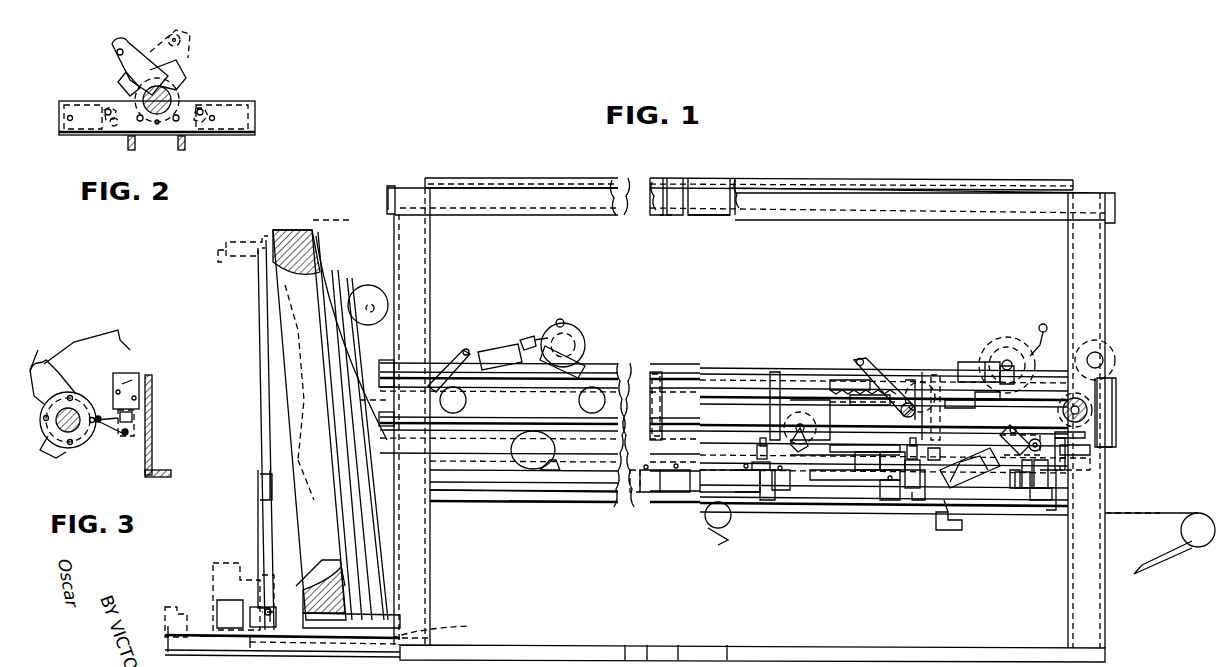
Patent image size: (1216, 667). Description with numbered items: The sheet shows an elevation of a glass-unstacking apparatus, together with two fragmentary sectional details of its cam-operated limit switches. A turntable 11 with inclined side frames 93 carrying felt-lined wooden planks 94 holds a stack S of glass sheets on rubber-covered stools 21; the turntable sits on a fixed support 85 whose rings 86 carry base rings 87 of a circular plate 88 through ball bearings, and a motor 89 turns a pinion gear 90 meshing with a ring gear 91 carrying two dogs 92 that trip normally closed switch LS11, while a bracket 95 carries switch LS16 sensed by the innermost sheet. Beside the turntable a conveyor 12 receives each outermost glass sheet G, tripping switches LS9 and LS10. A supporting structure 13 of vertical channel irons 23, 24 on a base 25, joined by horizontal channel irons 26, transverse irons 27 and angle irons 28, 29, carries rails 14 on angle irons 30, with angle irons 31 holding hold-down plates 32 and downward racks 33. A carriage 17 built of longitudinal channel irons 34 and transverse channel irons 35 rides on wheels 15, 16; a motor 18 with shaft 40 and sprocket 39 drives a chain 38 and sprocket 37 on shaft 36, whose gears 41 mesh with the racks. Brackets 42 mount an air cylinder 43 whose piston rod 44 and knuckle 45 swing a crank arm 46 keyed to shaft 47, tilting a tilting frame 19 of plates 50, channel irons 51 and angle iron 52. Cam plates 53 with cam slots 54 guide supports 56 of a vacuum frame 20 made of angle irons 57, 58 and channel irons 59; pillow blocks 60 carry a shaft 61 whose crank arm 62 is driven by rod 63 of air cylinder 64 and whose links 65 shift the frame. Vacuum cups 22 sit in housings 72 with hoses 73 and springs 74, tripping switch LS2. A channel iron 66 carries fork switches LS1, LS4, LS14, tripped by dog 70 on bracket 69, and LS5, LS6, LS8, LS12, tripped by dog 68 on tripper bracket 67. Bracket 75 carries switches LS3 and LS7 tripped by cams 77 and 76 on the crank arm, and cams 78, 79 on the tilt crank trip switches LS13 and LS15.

In FIG. 1, the turntable 11 is at (255, 244).
In FIG. 1, the conveyor 12 is at (718, 540).
In FIG. 1, the supporting structure 13 is at (390, 186).
In FIG. 1, the horizontal rails 14 is at (850, 410).
In FIG. 1, the wheels 15 is at (962, 407).
In FIG. 1, the wheels 16 is at (1022, 427).
In FIG. 1, the carriage 17 is at (940, 385).
In FIG. 1, the motor 18 is at (562, 320).
In FIG. 1, the tilting frame 19 is at (848, 400).
In FIG. 1, the vacuum frame 20 is at (750, 484).
In FIG. 1, the stools 21 is at (346, 622).
In FIG. 1, the vacuum cups 22 is at (775, 496).
In FIG. 1, the vertical channel irons 23 is at (431, 250).
In FIG. 1, the vertical channel irons 24 is at (1068, 254).
In FIG. 1, the base 25 is at (720, 642).
In FIG. 1, the horizontal channel irons 26 is at (740, 218).
In FIG. 1, the transverse horizontal irons 27 is at (388, 212).
In FIG. 1, the angle irons 28 is at (740, 178).
In FIG. 1, the transverse angle irons 29 is at (428, 178).
In FIG. 1, the angle iron 30 is at (448, 438).
In FIG. 1, the angle irons 31 is at (442, 352).
In FIG. 1, the hold-down plate 32 is at (386, 362).
In FIG. 1, the horizontal racks 33 is at (840, 380).
In FIG. 1, the longitudinal channel irons 34 is at (989, 403).
In FIG. 3, the transverse channel irons 35 is at (152, 438).
In FIG. 1, the transverse channel irons 35 is at (934, 375).
In FIG. 1, the shaft 36 is at (1090, 400).
In FIG. 1, the sprocket 37 is at (1095, 412).
In FIG. 1, the chain 38 is at (1006, 337).
In FIG. 1, the sprocket 39 is at (1030, 366).
In FIG. 1, the shaft 40 is at (1046, 328).
In FIG. 1, the gears 41 is at (1100, 380).
In FIG. 1, the brackets 42 is at (990, 362).
In FIG. 1, the air cylinder 43 is at (968, 362).
In FIG. 1, the piston rod 44 is at (906, 380).
In FIG. 1, the knuckle 45 is at (870, 395).
In FIG. 3, the crank arm 46 is at (82, 356).
In FIG. 1, the crank arm 46 is at (896, 392).
In FIG. 3, the shaft 47 is at (60, 440).
In FIG. 1, the shaft 47 is at (922, 372).
In FIG. 1, the plates 50 is at (866, 456).
In FIG. 1, the channel irons 51 is at (1126, 448).
In FIG. 1, the angle iron 52 is at (890, 456).
In FIG. 1, the cam plate 53 is at (800, 400).
In FIG. 1, the cam slot 54 is at (775, 400).
In FIG. 1, the supports 56 is at (836, 484).
In FIG. 1, the angle irons 57 is at (845, 458).
In FIG. 1, the angle irons 58 is at (758, 452).
In FIG. 2, the channel irons 59 is at (180, 144).
In FIG. 1, the channel irons 59 is at (1040, 470).
In FIG. 1, the pillow blocks 60 is at (1043, 502).
In FIG. 2, the shaft 61 is at (173, 98).
In FIG. 1, the shaft 61 is at (1068, 466).
In FIG. 2, the crank arm 62 is at (158, 52).
In FIG. 1, the crank arm 62 is at (1012, 426).
In FIG. 1, the rod 63 is at (1026, 470).
In FIG. 1, the air cylinder 64 is at (970, 468).
In FIG. 1, the link 65 is at (1040, 440).
In FIG. 1, the channel iron 66 is at (524, 480).
In FIG. 1, the tripper bracket 67 is at (944, 455).
In FIG. 1, the dog 68 is at (1012, 472).
In FIG. 1, the bracket 69 is at (1092, 433).
In FIG. 1, the dog 70 is at (1092, 464).
In FIG. 1, the housing 72 is at (772, 446).
In FIG. 1, the hose 73 is at (796, 432).
In FIG. 1, the spring 74 is at (908, 490).
In FIG. 2, the bracket 75 is at (256, 118).
In FIG. 2, the cam 76 is at (120, 80).
In FIG. 2, the cam 77 is at (180, 72).
In FIG. 3, the cam 78 is at (76, 454).
In FIG. 3, the cam 79 is at (58, 368).
In FIG. 1, the fixed support 85 is at (370, 646).
In FIG. 1, the rings 86 is at (320, 645).
In FIG. 1, the base rings 87 is at (330, 600).
In FIG. 1, the circular plate 88 is at (420, 640).
In FIG. 1, the motor 89 is at (214, 574).
In FIG. 1, the pinion gear 90 is at (215, 618).
In FIG. 1, the ring gear 91 is at (254, 650).
In FIG. 1, the dogs 92 is at (174, 604).
In FIG. 1, the inclined side frames 93 is at (266, 324).
In FIG. 1, the wooden planks 94 is at (299, 392).
In FIG. 1, the bracket 95 is at (258, 516).
In FIG. 1, the stack S is at (292, 226).
In FIG. 1, the glass sheet G is at (466, 504).
In FIG. 1, the limit switch LS1 is at (632, 494).
In FIG. 1, the limit switch LS2 is at (782, 492).
In FIG. 2, the limit switch LS3 is at (232, 108).
In FIG. 1, the limit switch LS4 is at (742, 468).
In FIG. 1, the limit switch LS5 is at (884, 502).
In FIG. 1, the limit switch LS6 is at (1000, 500).
In FIG. 2, the limit switch LS7 is at (80, 108).
In FIG. 1, the limit switch LS8 is at (546, 502).
In FIG. 1, the limit switch LS9 is at (962, 530).
In FIG. 1, the limit switch LS10 is at (1162, 530).
In FIG. 1, the limit switch LS11 is at (262, 607).
In FIG. 1, the limit switch LS12 is at (670, 494).
In FIG. 3, the limit switch LS13 is at (118, 440).
In FIG. 1, the limit switch LS14 is at (670, 450).
In FIG. 3, the limit switch LS15 is at (140, 410).
In FIG. 1, the limit switch LS16 is at (260, 488).